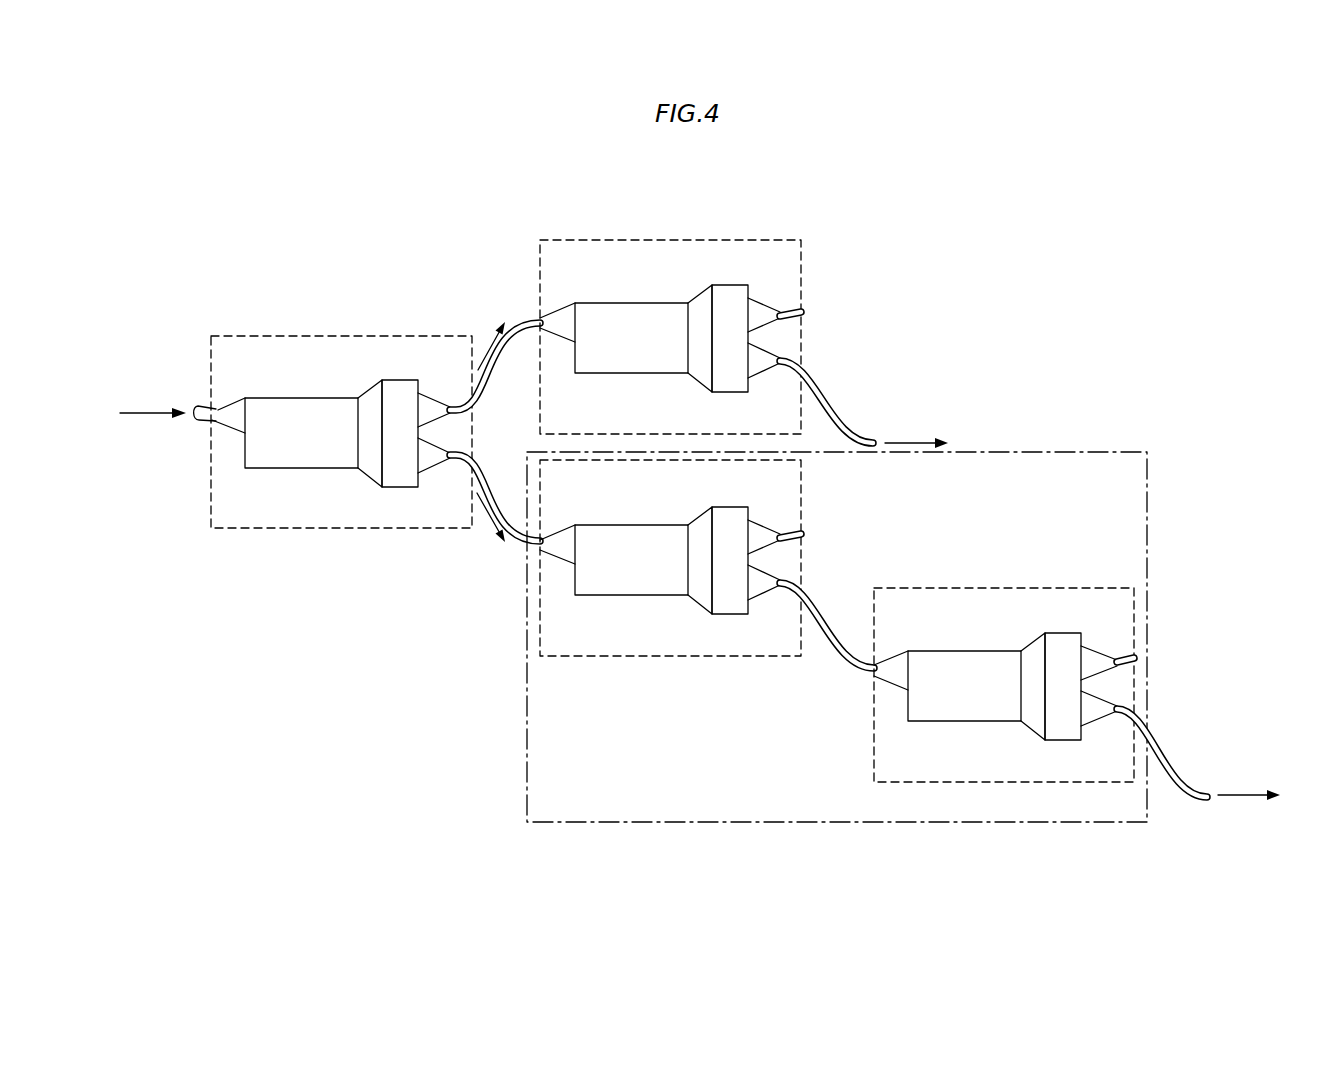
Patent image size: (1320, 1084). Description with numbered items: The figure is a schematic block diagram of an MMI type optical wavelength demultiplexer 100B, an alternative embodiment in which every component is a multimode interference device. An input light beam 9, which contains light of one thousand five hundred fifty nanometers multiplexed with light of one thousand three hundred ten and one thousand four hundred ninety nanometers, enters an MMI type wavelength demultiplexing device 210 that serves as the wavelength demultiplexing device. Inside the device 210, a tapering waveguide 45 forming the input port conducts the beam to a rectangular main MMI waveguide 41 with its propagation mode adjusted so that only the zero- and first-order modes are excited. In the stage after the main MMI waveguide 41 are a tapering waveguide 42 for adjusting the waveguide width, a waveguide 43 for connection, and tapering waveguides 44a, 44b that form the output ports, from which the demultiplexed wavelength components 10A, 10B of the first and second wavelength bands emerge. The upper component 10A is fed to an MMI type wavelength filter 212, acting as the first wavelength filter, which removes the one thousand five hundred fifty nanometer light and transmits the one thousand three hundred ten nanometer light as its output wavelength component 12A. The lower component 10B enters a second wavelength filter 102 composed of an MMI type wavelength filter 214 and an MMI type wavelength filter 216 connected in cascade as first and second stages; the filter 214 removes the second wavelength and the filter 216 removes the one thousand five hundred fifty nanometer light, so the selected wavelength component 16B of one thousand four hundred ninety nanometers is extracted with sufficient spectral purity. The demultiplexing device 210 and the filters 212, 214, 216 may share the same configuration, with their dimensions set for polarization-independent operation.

The MMI type optical wavelength demultiplexer 100B is at (1010, 274).
The input light beam 9 is at (205, 403).
The tapering waveguide 45 is at (232, 415).
The main MMI waveguide 41 is at (270, 457).
The tapering waveguide 42 is at (368, 462).
The waveguide 43 is at (402, 460).
The tapering waveguide 44a is at (435, 453).
The tapering waveguide 44b is at (435, 408).
The MMI type wavelength demultiplexing device 210 is at (312, 336).
The wavelength component 10A is at (512, 362).
The wavelength component 10B is at (500, 487).
The MMI type wavelength filter 212 is at (676, 240).
The MMI type wavelength filter 214 is at (662, 657).
The MMI type wavelength filter 216 is at (1011, 588).
The wavelength component 12A is at (850, 422).
The wavelength component 16B is at (1187, 782).
The second wavelength filter 102 is at (666, 822).